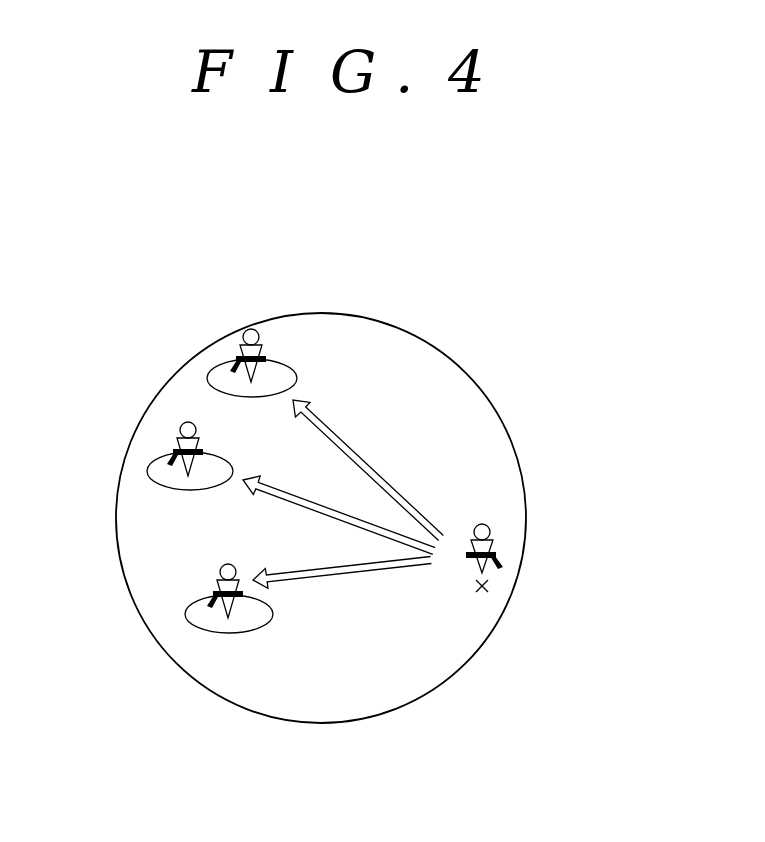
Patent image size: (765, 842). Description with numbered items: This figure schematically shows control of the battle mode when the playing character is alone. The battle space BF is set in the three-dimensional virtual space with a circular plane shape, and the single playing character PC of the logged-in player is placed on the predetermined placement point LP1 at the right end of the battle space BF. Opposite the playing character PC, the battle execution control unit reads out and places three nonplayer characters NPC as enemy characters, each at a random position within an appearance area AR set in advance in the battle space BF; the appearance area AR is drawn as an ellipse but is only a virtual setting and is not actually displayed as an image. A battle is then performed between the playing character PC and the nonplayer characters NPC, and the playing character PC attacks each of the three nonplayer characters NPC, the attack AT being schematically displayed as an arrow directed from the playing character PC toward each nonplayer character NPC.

The battle space BF is at (415, 305).
The nonplayer character NPC is at (252, 327).
The appearance area AR is at (215, 368).
The attack AT is at (378, 472).
The playing character PC is at (505, 528).
The placement point LP1 is at (480, 591).